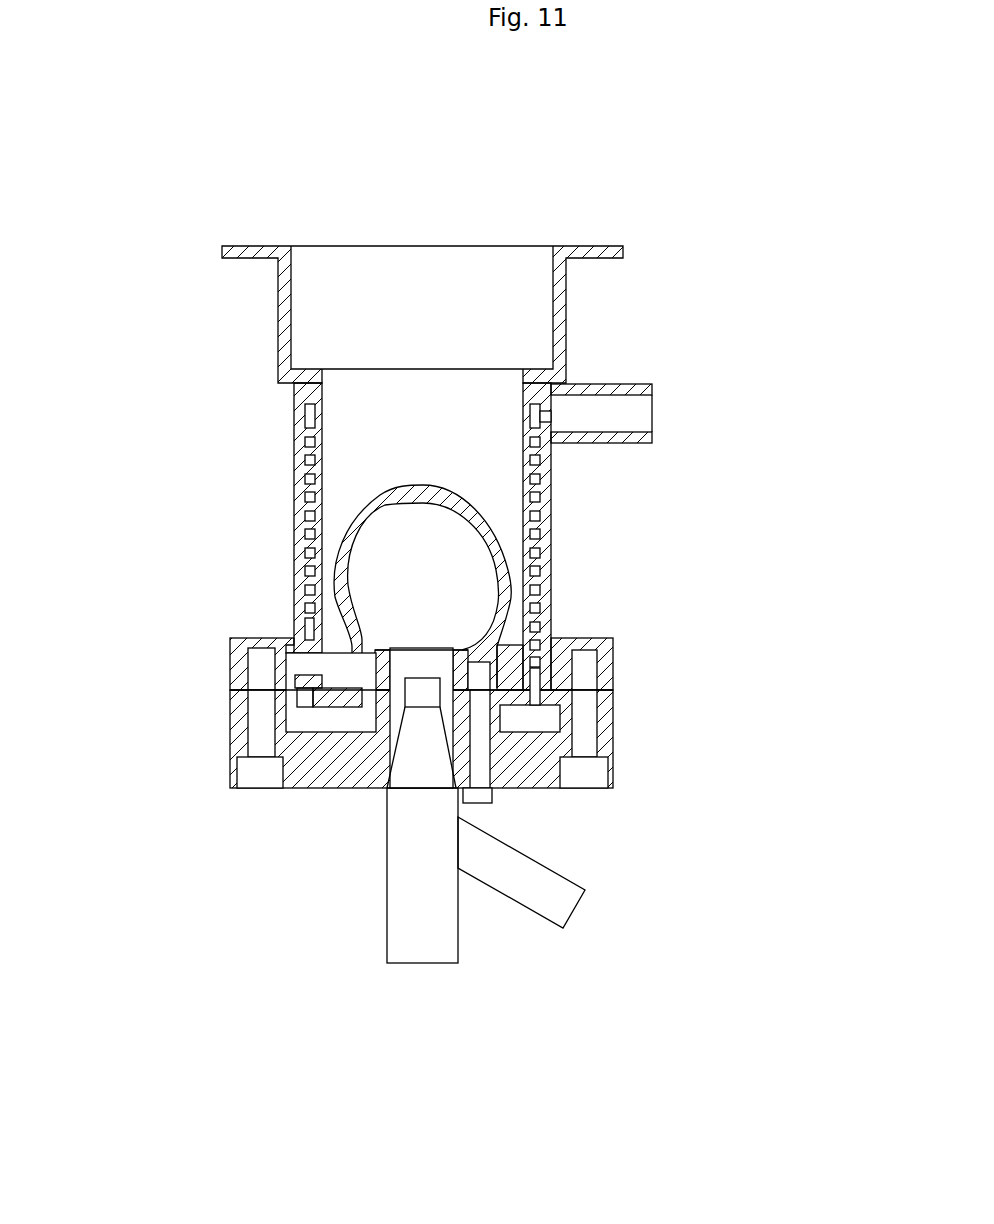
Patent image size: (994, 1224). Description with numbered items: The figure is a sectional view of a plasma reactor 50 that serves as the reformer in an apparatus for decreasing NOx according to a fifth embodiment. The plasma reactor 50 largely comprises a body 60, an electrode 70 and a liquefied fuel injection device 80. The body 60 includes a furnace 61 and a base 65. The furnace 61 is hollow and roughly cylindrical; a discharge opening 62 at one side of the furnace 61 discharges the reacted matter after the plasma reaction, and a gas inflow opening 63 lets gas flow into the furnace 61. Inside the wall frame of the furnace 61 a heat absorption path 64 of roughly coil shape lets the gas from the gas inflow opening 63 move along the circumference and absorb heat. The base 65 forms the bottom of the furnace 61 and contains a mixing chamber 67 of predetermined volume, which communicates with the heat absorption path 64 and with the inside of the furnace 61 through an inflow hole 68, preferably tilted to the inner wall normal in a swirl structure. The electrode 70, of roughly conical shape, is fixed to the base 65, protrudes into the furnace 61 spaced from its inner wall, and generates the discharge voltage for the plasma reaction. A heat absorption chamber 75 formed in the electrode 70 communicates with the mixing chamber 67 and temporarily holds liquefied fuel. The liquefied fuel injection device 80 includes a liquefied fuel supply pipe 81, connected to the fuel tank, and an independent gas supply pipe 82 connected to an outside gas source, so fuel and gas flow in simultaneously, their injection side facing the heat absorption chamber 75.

The plasma reactor 50 is at (668, 232).
The body 60 is at (120, 615).
The furnace 61 is at (301, 617).
The discharge opening 62 is at (432, 260).
The gas inflow opening 63 is at (627, 407).
The heat absorption path 64 is at (540, 493).
The base 65 is at (423, 642).
The mixing chamber 67 is at (552, 715).
The inflow hole 68 is at (302, 667).
The electrode 70 is at (422, 542).
The heat absorption chamber 75 is at (402, 545).
The liquefied fuel injection device 80 is at (503, 947).
The liquefied fuel supply pipe 81 is at (447, 942).
The gas supply pipe 82 is at (570, 903).